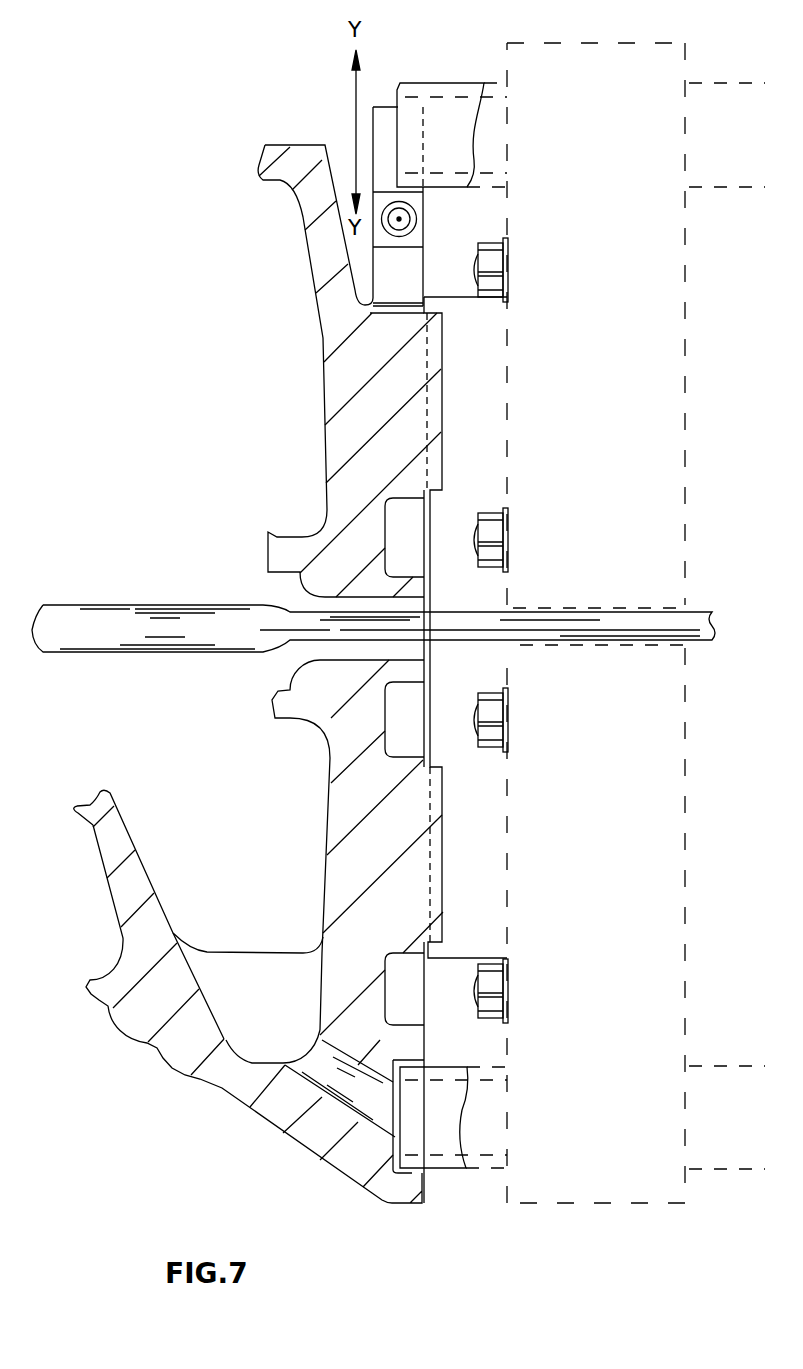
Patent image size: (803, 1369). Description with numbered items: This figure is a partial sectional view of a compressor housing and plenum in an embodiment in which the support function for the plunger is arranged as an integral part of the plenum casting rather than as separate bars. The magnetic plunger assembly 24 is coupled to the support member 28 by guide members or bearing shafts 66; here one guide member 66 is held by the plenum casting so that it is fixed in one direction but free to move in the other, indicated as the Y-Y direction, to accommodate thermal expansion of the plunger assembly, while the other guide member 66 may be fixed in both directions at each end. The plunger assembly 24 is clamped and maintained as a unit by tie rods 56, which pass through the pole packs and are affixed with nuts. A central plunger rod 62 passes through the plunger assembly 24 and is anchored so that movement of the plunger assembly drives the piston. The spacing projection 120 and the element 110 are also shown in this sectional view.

The plunger assembly 24 is at (570, 1165).
The support member 28 is at (422, 199).
The tie rod 56 is at (505, 283).
The central plunger rod 62 is at (563, 627).
The guide member 66 is at (443, 88).
The locating pin 110 is at (403, 228).
The spacer plates 120 is at (444, 447).